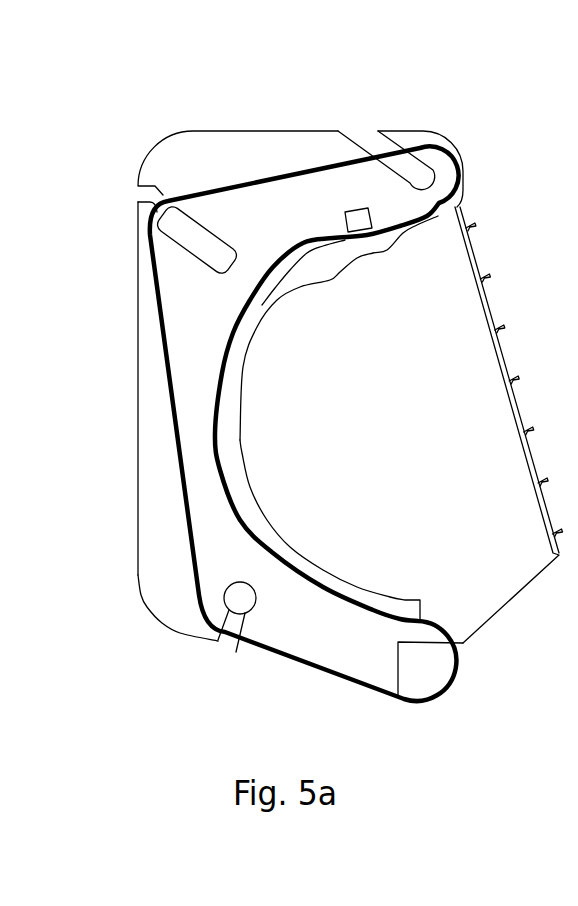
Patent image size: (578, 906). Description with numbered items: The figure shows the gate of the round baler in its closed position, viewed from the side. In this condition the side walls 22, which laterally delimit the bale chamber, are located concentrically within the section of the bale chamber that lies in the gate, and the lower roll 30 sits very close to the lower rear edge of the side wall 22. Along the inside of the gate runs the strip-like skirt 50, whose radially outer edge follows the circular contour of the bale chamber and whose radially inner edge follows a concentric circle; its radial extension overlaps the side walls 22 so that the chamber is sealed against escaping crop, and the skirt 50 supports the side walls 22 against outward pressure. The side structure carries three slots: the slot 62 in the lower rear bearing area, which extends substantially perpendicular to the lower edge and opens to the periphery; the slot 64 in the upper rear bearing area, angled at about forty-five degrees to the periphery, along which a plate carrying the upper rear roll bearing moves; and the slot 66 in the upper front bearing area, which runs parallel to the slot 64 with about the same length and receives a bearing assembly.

The side wall 22 is at (371, 432).
The lower roll 30 is at (462, 718).
The skirt 50 is at (342, 580).
The slot 62 is at (227, 640).
The slot 64 is at (147, 193).
The slot 66 is at (372, 138).